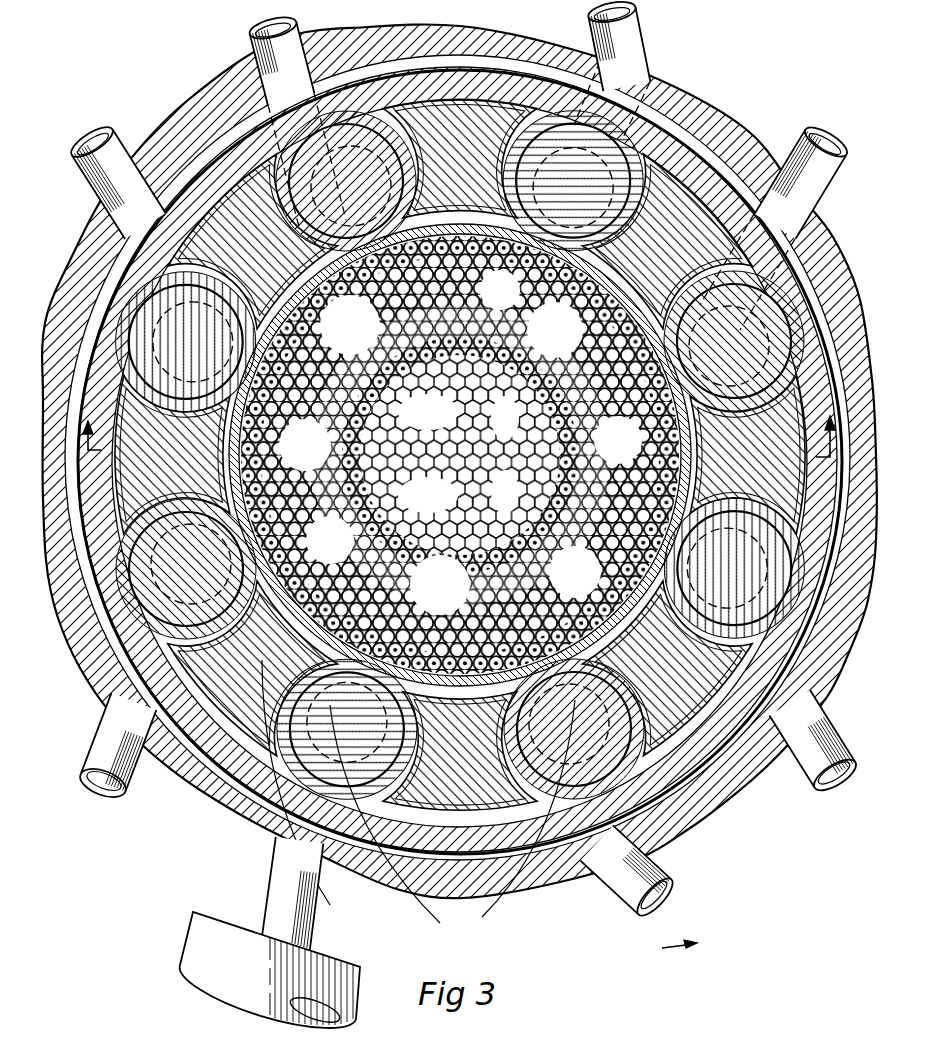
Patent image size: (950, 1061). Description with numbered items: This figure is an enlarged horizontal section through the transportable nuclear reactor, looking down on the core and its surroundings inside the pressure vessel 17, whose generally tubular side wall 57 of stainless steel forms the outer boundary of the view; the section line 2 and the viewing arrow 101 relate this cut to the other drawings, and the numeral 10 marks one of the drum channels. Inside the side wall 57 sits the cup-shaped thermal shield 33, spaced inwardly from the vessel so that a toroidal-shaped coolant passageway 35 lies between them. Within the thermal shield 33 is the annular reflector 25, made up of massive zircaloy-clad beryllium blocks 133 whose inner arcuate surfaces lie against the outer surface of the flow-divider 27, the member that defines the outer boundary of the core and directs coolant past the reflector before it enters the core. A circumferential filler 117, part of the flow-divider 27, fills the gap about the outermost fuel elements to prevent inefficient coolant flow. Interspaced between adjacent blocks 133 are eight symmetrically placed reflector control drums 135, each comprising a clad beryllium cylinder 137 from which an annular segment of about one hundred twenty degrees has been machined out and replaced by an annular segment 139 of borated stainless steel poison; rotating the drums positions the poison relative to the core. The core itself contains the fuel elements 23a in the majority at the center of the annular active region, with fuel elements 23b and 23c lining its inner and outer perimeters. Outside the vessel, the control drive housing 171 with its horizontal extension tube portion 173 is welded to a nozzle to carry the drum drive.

The section line 2- 2 is at (457, 453).
The control rod channel 10 is at (586, 736).
The pressure vessel 17 is at (458, 461).
The fuel elements 23a is at (585, 375).
The fuel elements 23b is at (480, 262).
The fuel elements 23c is at (512, 262).
The annular reflector 25 is at (78, 268).
The flow-divider 27 is at (522, 270).
The thermal shield 33 is at (195, 193).
The toroidal-shaped coolant passageway 35 is at (217, 147).
The side wall 57 is at (237, 97).
The viewing direction arrow 101 is at (663, 946).
The circumferential filler 117 is at (460, 455).
The blocks 133 is at (460, 454).
The reflector control drums 135 is at (418, 797).
The cylinder 137 is at (352, 110).
The annular segment 139 is at (520, 216).
The control drive housing 171 is at (200, 940).
The horizontal extension tube portion 173 is at (268, 30).